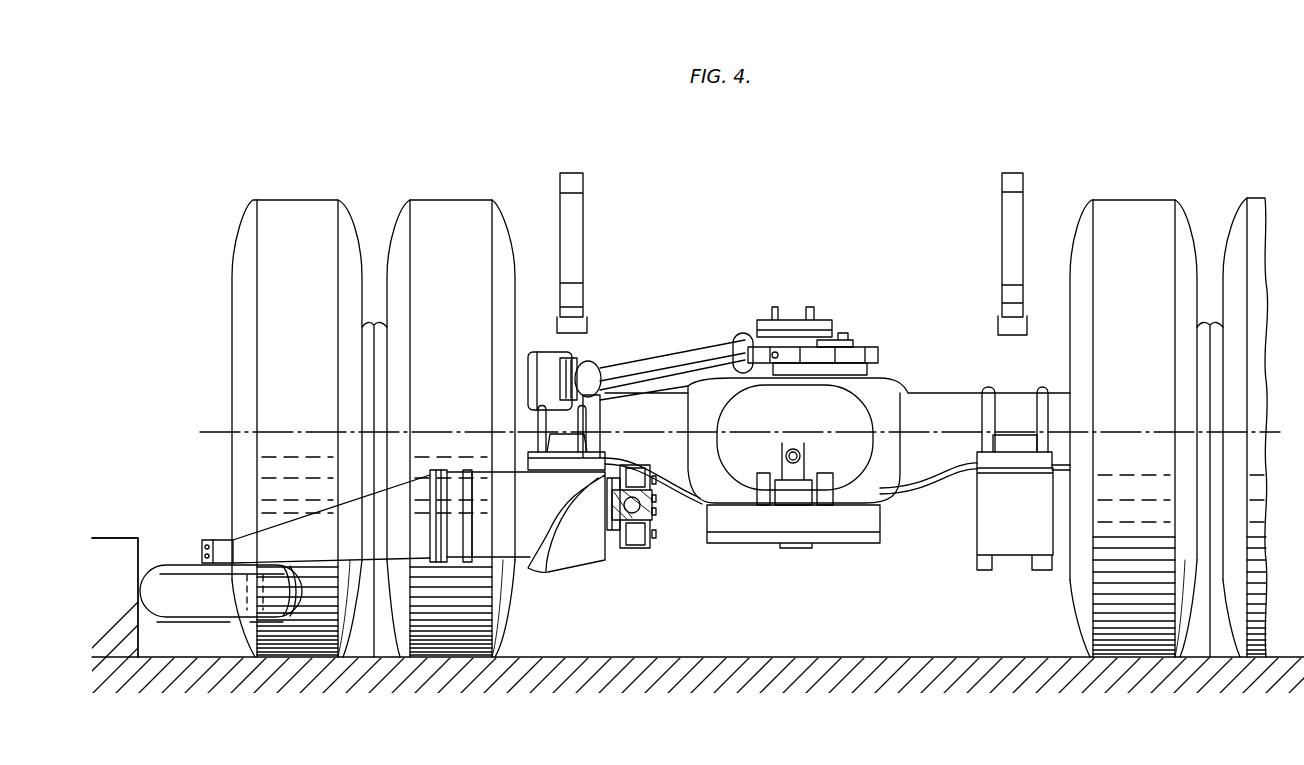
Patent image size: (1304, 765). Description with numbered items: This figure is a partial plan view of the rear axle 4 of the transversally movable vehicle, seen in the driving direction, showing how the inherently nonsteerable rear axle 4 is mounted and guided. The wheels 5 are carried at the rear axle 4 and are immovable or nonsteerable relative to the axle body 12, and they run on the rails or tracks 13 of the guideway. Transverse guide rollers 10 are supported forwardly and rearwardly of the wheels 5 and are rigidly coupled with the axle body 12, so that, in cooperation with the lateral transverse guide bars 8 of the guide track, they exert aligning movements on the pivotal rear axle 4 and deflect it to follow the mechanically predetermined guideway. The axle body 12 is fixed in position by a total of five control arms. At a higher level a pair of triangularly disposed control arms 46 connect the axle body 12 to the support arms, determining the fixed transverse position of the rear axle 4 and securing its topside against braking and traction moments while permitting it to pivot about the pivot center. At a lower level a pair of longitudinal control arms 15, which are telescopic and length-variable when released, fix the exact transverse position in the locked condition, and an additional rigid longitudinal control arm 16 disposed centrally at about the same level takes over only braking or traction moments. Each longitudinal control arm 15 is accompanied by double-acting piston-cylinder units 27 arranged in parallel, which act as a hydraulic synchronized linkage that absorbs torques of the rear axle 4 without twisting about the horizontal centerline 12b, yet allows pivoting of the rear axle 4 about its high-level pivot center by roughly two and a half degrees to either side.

The rear axle 4 is at (851, 334).
The wheels 5 is at (425, 213).
The lateral transverse guide bars 8 is at (140, 538).
The guide rollers 10 is at (180, 585).
The axle body 12 is at (617, 410).
The centerline 12b is at (945, 455).
The rails or tracks 13 is at (820, 657).
The longitudinal control arms 15 is at (639, 557).
The rigid longitudinal control arm 16 is at (790, 547).
The piston-cylinder units 27 is at (636, 463).
The triangularly disposed control arms 46 is at (672, 360).